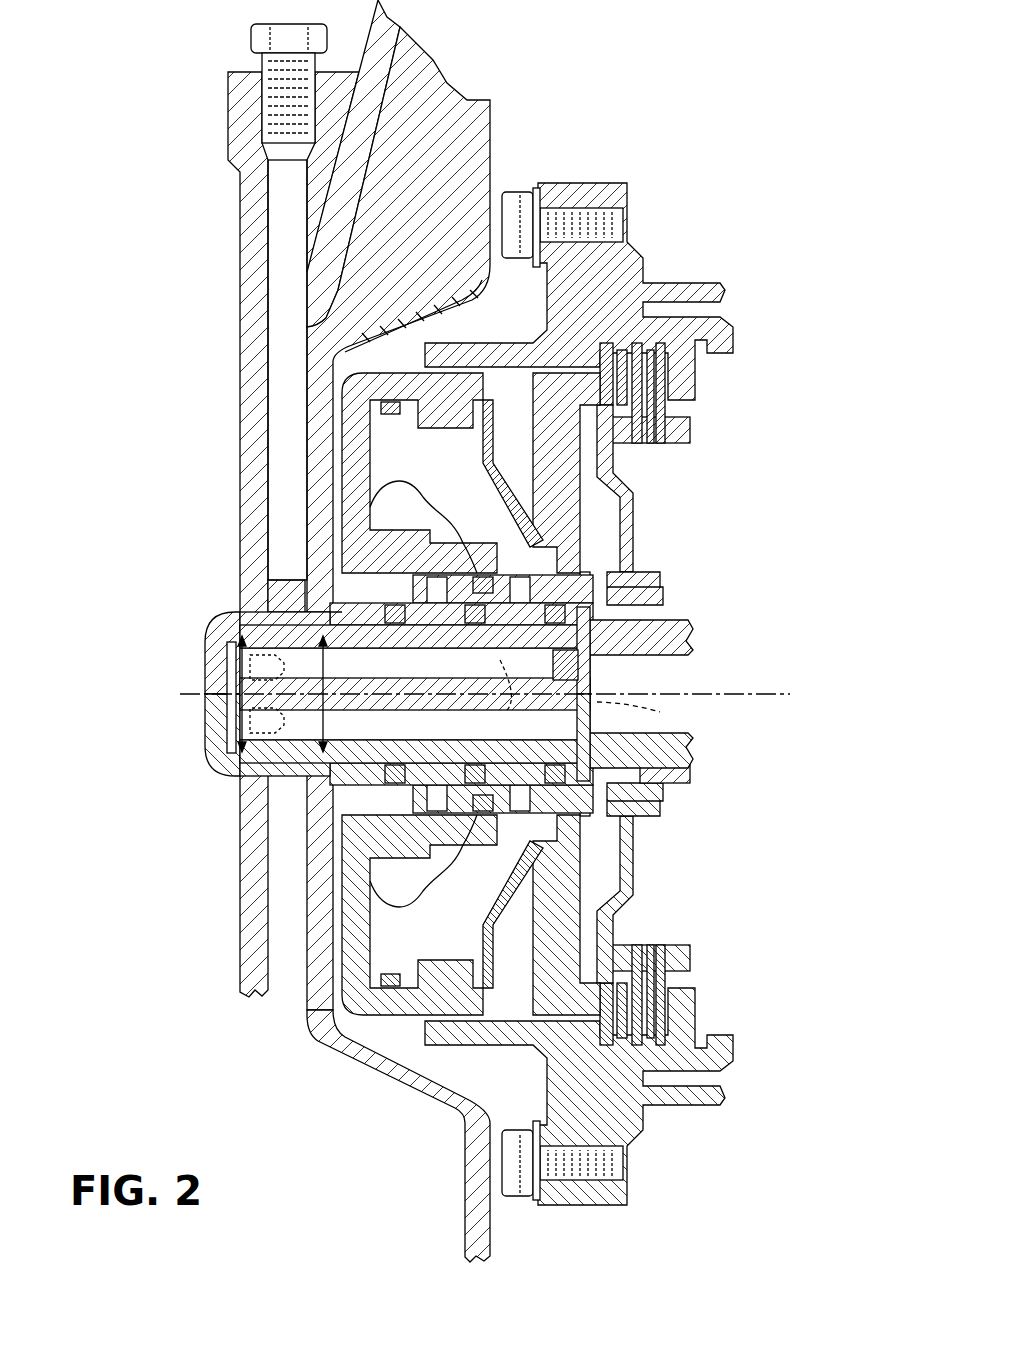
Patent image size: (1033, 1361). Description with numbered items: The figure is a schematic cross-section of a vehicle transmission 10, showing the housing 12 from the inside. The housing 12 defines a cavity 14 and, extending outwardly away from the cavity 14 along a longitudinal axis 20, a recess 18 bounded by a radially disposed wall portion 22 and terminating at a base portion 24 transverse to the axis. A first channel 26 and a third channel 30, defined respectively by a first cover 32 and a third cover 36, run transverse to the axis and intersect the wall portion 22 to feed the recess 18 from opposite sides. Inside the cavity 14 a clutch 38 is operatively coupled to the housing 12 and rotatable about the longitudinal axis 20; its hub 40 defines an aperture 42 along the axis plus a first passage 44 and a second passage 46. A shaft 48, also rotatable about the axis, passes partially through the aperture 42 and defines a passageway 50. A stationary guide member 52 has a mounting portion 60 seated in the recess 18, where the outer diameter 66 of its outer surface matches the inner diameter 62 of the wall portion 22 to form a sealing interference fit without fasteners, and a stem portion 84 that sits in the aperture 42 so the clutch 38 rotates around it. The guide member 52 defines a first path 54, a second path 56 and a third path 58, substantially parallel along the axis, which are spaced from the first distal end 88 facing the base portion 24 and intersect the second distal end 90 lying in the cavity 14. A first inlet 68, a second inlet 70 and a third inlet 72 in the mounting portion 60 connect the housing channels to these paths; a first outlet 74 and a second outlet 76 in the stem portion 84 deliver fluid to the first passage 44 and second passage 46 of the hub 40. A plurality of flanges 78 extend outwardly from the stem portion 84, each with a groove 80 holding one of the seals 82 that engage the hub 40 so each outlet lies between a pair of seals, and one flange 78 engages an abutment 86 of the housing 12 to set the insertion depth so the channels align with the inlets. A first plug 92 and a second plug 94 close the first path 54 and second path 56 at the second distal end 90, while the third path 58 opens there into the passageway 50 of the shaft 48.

The transmission 10 is at (686, 90).
The housing 12 is at (321, 498).
The cavity 14 is at (700, 190).
The recess 18 is at (377, 507).
The longitudinal axis 20 is at (720, 677).
The wall portion 22 is at (290, 590).
The base portion 24 is at (230, 752).
The first channel 26 is at (287, 490).
The third channel 30 is at (285, 918).
The first cover 32 is at (238, 342).
The third cover 36 is at (250, 950).
The clutch 38 is at (404, 1028).
The hub 40 is at (577, 540).
The aperture 42 is at (348, 792).
The first passage 44 is at (437, 590).
The second passage 46 is at (513, 583).
The shaft 48 is at (677, 752).
The passageway 50 is at (455, 683).
The guide member 52 is at (603, 587).
The first path 54 is at (683, 637).
The second path 56 is at (420, 723).
The third path 58 is at (573, 727).
The mounting portion 60 is at (235, 612).
The inner diameter 62 is at (317, 670).
The outer diameter 66 is at (225, 637).
The first inlet 68 is at (282, 606).
The second inlet 70 is at (270, 713).
The third inlet 72 is at (270, 765).
The first outlet 74 is at (433, 643).
The second outlet 76 is at (510, 713).
The flanges 78 is at (300, 772).
The groove 80 is at (430, 745).
The seals 82 is at (573, 823).
The stem portion 84 is at (632, 807).
The abutment 86 is at (330, 580).
The first distal end 88 is at (232, 680).
The second distal end 90 is at (657, 770).
The first plug 92 is at (580, 657).
The second plug 94 is at (640, 710).